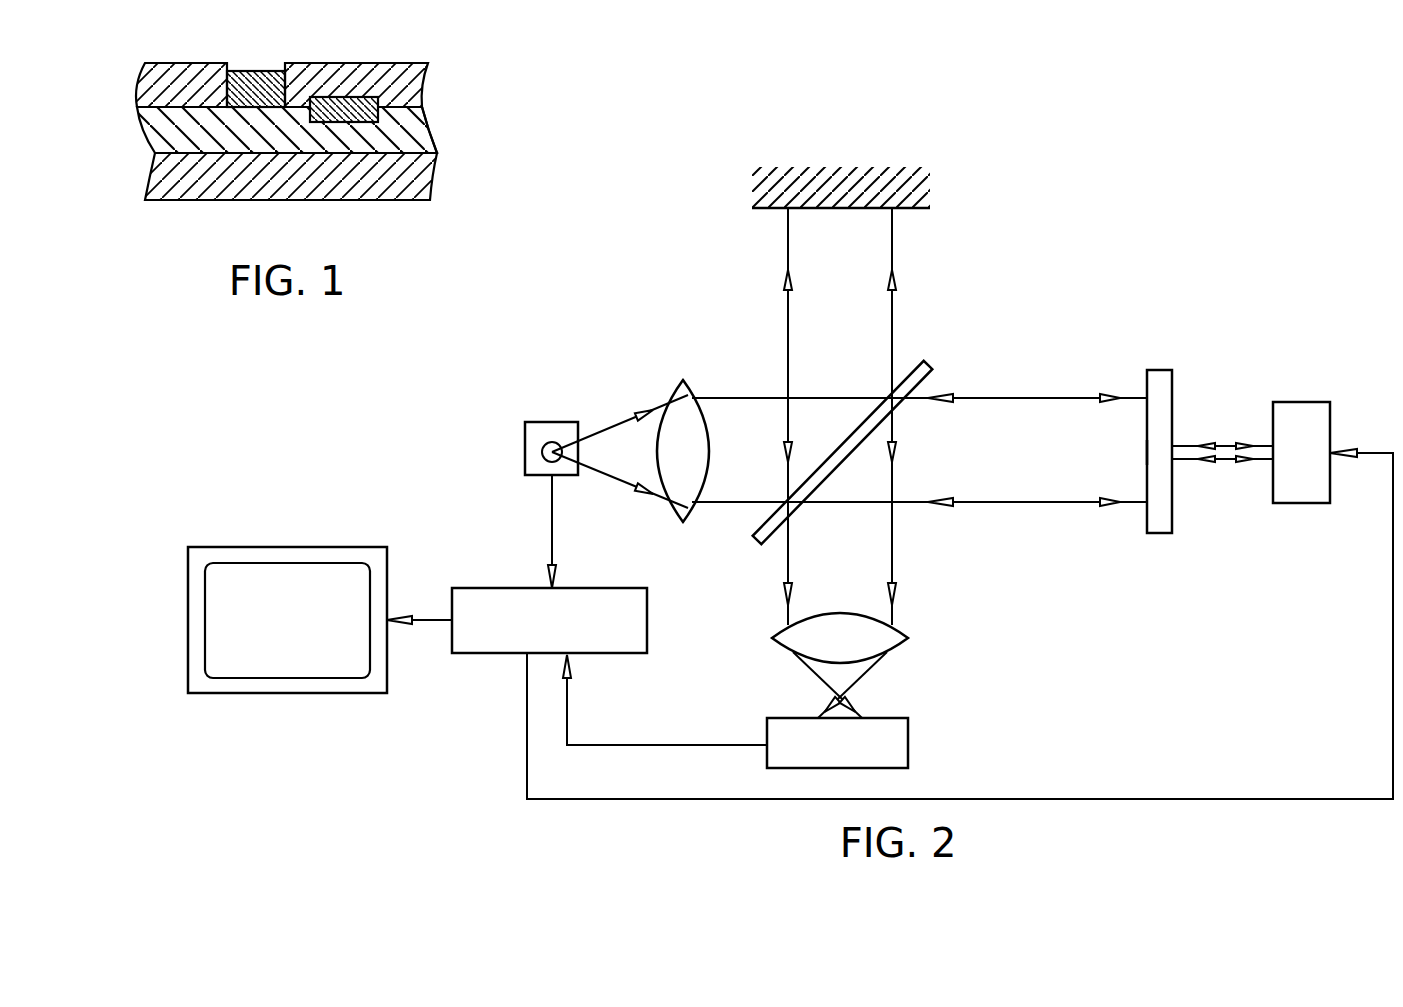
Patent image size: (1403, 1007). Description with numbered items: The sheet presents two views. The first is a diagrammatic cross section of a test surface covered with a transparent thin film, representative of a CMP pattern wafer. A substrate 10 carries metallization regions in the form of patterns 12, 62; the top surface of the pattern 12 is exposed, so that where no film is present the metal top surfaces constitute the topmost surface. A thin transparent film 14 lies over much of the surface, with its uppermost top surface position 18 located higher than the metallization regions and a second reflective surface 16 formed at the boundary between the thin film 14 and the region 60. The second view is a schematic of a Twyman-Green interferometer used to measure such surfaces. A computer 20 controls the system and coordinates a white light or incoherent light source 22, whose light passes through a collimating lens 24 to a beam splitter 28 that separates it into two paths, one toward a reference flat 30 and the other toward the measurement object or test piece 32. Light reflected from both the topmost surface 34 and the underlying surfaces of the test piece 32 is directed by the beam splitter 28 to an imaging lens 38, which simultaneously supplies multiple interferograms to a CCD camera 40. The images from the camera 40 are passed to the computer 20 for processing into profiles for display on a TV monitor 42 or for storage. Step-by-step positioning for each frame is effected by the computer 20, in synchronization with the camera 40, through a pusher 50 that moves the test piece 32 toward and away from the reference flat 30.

In FIG. 1, the substrate 10 is at (197, 198).
In FIG. 1, the pattern 12 is at (255, 71).
In FIG. 1, the thin transparent film 14 is at (407, 80).
In FIG. 1, the second reflective surface 16 is at (143, 96).
In FIG. 1, the top surface position 18 is at (185, 63).
In FIG. 1, the region 60 is at (417, 128).
In FIG. 1, the pattern 62 is at (330, 97).
In FIG. 2, the computer 20 is at (495, 655).
In FIG. 2, the light source 22 is at (563, 422).
In FIG. 2, the collimating lens 24 is at (708, 428).
In FIG. 2, the beam splitter 28 is at (888, 420).
In FIG. 2, the reference flat 30 is at (912, 208).
In FIG. 2, the test piece 32 is at (1158, 370).
In FIG. 2, the topmost surface 34 is at (1147, 457).
In FIG. 2, the imaging lens 38 is at (840, 613).
In FIG. 2, the CCD camera 40 is at (893, 718).
In FIG. 2, the TV monitor 42 is at (285, 695).
In FIG. 2, the pusher 50 is at (1305, 402).